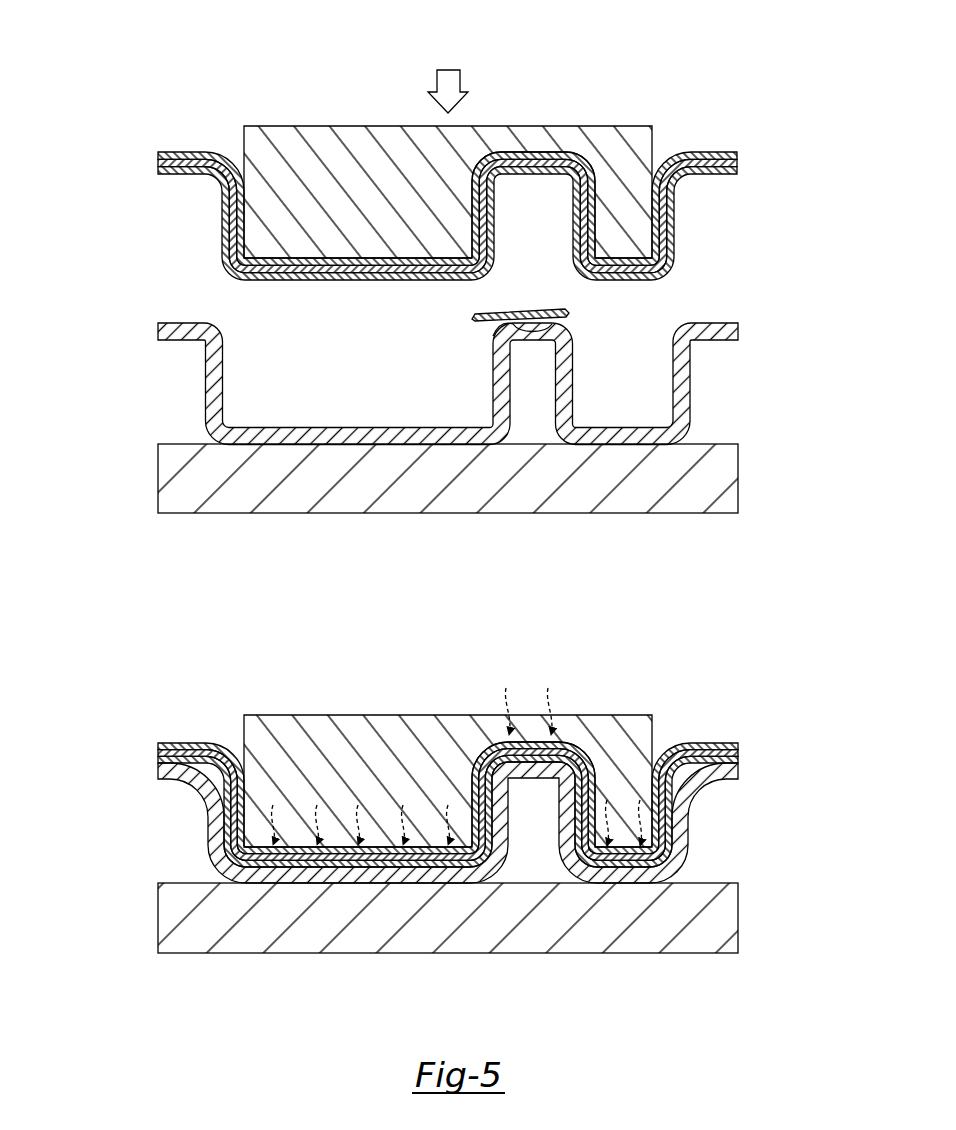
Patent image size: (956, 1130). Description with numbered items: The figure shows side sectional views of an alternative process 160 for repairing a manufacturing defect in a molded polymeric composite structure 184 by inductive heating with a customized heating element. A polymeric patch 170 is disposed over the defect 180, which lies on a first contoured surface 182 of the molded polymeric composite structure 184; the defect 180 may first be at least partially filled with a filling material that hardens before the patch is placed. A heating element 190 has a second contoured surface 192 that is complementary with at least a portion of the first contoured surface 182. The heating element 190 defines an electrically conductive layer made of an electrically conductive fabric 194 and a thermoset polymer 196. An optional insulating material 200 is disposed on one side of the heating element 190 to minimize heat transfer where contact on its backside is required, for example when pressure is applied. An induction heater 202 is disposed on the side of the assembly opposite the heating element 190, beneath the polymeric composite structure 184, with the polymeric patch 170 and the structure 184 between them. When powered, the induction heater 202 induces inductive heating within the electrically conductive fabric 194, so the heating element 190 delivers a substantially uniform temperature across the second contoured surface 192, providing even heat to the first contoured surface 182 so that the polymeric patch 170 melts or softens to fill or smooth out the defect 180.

The alternative process 160 is at (200, 56).
The polymeric patch 170 is at (568, 314).
The defect 180 is at (495, 327).
The first contoured surface 182 is at (493, 385).
The molded polymeric composite structure 184 is at (738, 330).
The heating element 190 is at (720, 152).
The second contoured surface 192 is at (520, 178).
The electrically conductive fabric 194 is at (737, 164).
The thermoset polymer 196 is at (737, 156).
The insulating material 200 is at (378, 126).
The induction heater 202 is at (650, 513).